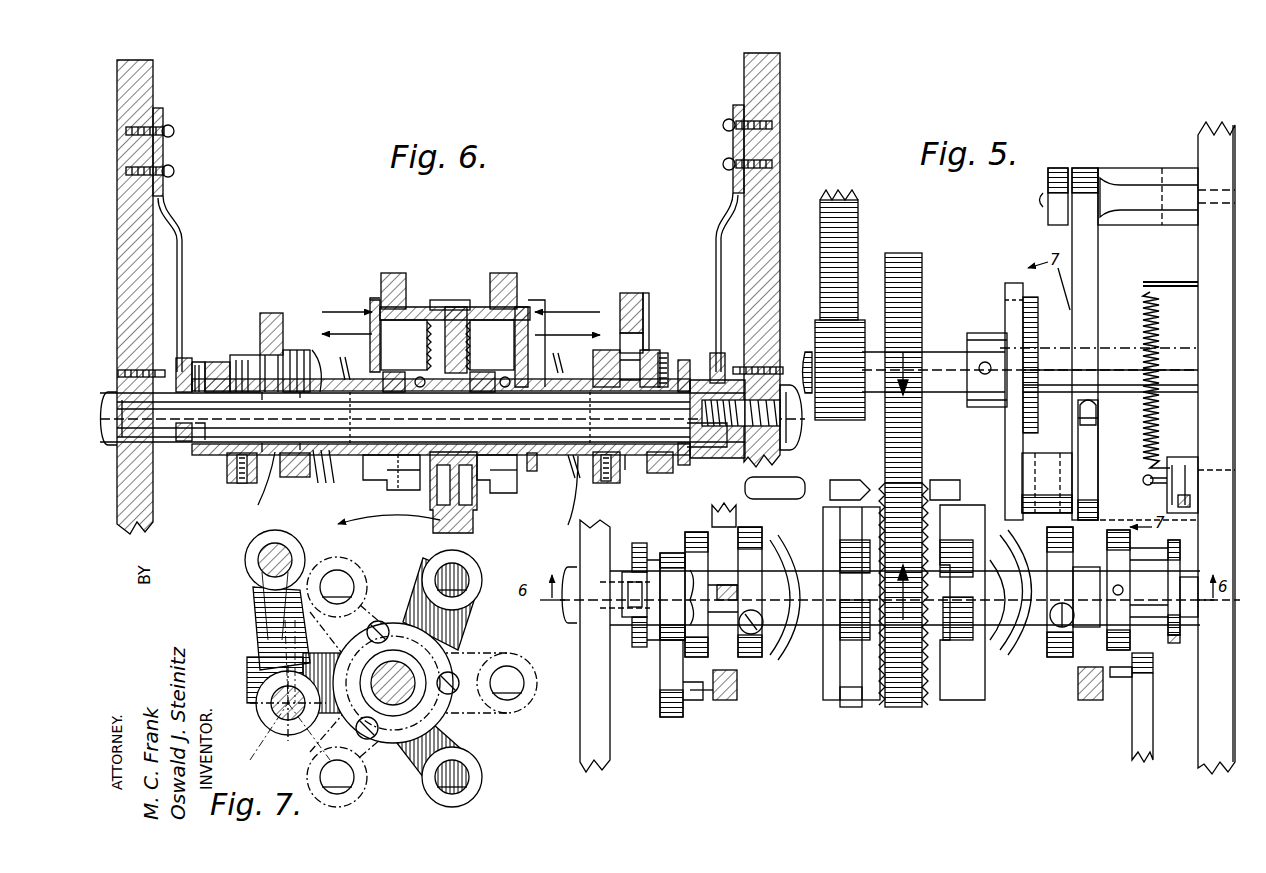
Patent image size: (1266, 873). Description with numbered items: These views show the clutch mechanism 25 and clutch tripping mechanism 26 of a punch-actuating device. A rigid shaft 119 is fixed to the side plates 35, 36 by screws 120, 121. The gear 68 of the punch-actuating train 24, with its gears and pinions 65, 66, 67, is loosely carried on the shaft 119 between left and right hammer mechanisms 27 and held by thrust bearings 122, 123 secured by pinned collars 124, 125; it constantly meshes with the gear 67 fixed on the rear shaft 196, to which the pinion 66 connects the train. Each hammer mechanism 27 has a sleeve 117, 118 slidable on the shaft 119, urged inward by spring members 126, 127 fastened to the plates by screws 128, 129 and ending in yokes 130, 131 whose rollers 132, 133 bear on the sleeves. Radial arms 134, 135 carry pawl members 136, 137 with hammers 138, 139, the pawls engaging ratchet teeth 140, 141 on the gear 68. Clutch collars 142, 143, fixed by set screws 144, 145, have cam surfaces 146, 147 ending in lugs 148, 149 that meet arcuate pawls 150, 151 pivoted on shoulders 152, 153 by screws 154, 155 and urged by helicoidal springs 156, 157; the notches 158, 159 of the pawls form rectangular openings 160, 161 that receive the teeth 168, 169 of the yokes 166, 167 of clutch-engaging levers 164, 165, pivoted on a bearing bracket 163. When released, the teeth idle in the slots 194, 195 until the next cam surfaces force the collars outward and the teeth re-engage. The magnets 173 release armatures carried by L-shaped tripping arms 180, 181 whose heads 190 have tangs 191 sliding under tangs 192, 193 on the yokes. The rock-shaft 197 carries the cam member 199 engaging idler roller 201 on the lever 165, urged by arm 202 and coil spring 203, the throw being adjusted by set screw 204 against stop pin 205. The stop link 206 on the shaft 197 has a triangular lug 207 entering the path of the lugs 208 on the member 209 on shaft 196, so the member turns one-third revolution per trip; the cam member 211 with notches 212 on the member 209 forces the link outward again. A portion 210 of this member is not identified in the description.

In FIG. 6, the side plate 35 is at (128, 232).
In FIG. 5, the side plate 35 is at (580, 728).
In FIG. 6, the side plate 36 is at (785, 200).
In FIG. 5, the side plate 36 is at (1198, 131).
In FIG. 5, the punch-actuating gear train 24 is at (862, 232).
In FIG. 6, the clutch mechanism 25 is at (555, 292).
In FIG. 5, the clutch mechanism 25 is at (918, 725).
In FIG. 6, the clutch tripping mechanism 26 is at (502, 543).
In FIG. 5, the clutch tripping mechanism 26 is at (1010, 282).
In FIG. 7, the clutch tripping mechanism 26 is at (482, 567).
In FIG. 6, the gear housing 27 is at (372, 297).
In FIG. 5, the gear housing 27 is at (820, 690).
In FIG. 5, the gear 65 is at (855, 195).
In FIG. 5, the pinion 66 is at (808, 348).
In FIG. 5, the gear 67 is at (905, 255).
In FIG. 6, the gear 68 is at (448, 300).
In FIG. 5, the gear 68 is at (880, 735).
In FIG. 6, the sleeve 117 is at (288, 478).
In FIG. 5, the sleeve 117 is at (789, 585).
In FIG. 6, the sleeve 118 is at (535, 472).
In FIG. 5, the sleeve 118 is at (1024, 583).
In FIG. 6, the rigid shaft 119 is at (560, 416).
In FIG. 5, the rigid shaft 119 is at (628, 555).
In FIG. 6, the screw 120 is at (115, 448).
In FIG. 5, the screw 120 is at (566, 565).
In FIG. 6, the screw 121 is at (800, 425).
In FIG. 6, the thrust bearing 122 is at (395, 455).
In FIG. 5, the thrust bearing 122 is at (855, 690).
In FIG. 6, the thrust bearing 123 is at (498, 452).
In FIG. 6, the collar 124 is at (385, 398).
In FIG. 5, the collar 124 is at (858, 642).
In FIG. 6, the collar 125 is at (552, 368).
In FIG. 5, the collar 125 is at (950, 545).
In FIG. 6, the spring member 126 is at (190, 238).
In FIG. 5, the spring member 126 is at (624, 610).
In FIG. 6, the spring member 127 is at (718, 228).
In FIG. 5, the spring member 127 is at (1196, 618).
In FIG. 6, the screw 128 is at (174, 134).
In FIG. 6, the screw 129 is at (724, 128).
In FIG. 6, the yoke 130 is at (190, 360).
In FIG. 5, the yoke 130 is at (635, 645).
In FIG. 6, the yoke 131 is at (708, 353).
In FIG. 5, the yoke 131 is at (1182, 640).
In FIG. 6, the rollers 132 is at (262, 402).
In FIG. 5, the rollers 132 is at (598, 635).
In FIG. 6, the rollers 133 is at (735, 450).
In FIG. 5, the rollers 133 is at (1182, 552).
In FIG. 6, the arm 134 is at (345, 323).
In FIG. 5, the arm 134 is at (830, 490).
In FIG. 6, the arm 135 is at (567, 323).
In FIG. 5, the arm 135 is at (985, 670).
In FIG. 6, the pawl member 136 is at (430, 505).
In FIG. 5, the pawl member 136 is at (862, 705).
In FIG. 6, the pawl member 137 is at (495, 493).
In FIG. 5, the pawl member 137 is at (945, 710).
In FIG. 6, the hammer 138 is at (392, 278).
In FIG. 5, the hammer 138 is at (866, 478).
In FIG. 6, the hammer 139 is at (500, 275).
In FIG. 5, the hammer 139 is at (948, 480).
In FIG. 6, the ratchet teeth 140 is at (425, 338).
In FIG. 5, the ratchet teeth 140 is at (875, 650).
In FIG. 6, the ratchet teeth 141 is at (460, 338).
In FIG. 5, the ratchet teeth 141 is at (953, 495).
In FIG. 6, the clutch collar 142 is at (224, 355).
In FIG. 5, the clutch collar 142 is at (668, 565).
In FIG. 6, the clutch collar 143 is at (665, 350).
In FIG. 5, the clutch collar 143 is at (1160, 650).
In FIG. 6, the set screw 144 is at (240, 483).
In FIG. 5, the set screw 144 is at (695, 545).
In FIG. 6, the set screw 145 is at (640, 477).
In FIG. 5, the set screw 145 is at (1149, 582).
In FIG. 6, the cam surface 146 is at (269, 428).
In FIG. 5, the cam surface 146 is at (760, 560).
In FIG. 6, the cam surface 147 is at (628, 440).
In FIG. 5, the cam surface 147 is at (1068, 655).
In FIG. 5, the lug 148 is at (724, 602).
In FIG. 5, the lug 149 is at (1048, 655).
In FIG. 6, the arcuate pawl 150 is at (290, 348).
In FIG. 5, the arcuate pawl 150 is at (759, 567).
In FIG. 6, the arcuate pawl 151 is at (598, 350).
In FIG. 5, the arcuate pawl 151 is at (1068, 592).
In FIG. 6, the shoulder 152 is at (311, 428).
In FIG. 5, the shoulder 152 is at (762, 635).
In FIG. 6, the shoulder 153 is at (589, 417).
In FIG. 5, the shoulder 153 is at (1028, 545).
In FIG. 6, the screw 154 is at (314, 397).
In FIG. 5, the screw 154 is at (778, 655).
In FIG. 6, the screw 155 is at (592, 482).
In FIG. 5, the screw 155 is at (1034, 598).
In FIG. 6, the flat helicoidal spring 156 is at (340, 362).
In FIG. 5, the flat helicoidal spring 156 is at (789, 597).
In FIG. 6, the flat helicoidal spring 157 is at (561, 495).
In FIG. 5, the notch 158 is at (855, 540).
In FIG. 5, the notch 159 is at (1012, 612).
In FIG. 6, the rectangular opening 160 is at (262, 358).
In FIG. 5, the rectangular opening 160 is at (662, 625).
In FIG. 6, the rectangular opening 161 is at (650, 353).
In FIG. 5, the rectangular opening 161 is at (1085, 575).
In FIG. 5, the bearing bracket 163 is at (1062, 170).
In FIG. 6, the clutch-engaging lever 164 is at (266, 310).
In FIG. 5, the clutch-engaging lever 164 is at (720, 504).
In FIG. 6, the clutch-engaging lever 165 is at (630, 292).
In FIG. 5, the clutch-engaging lever 165 is at (1088, 280).
In FIG. 6, the arcuate yoke 166 is at (282, 300).
In FIG. 5, the arcuate yoke 166 is at (727, 702).
In FIG. 6, the arcuate yoke 167 is at (647, 300).
In FIG. 5, the arcuate yoke 167 is at (1090, 700).
In FIG. 6, the clutch-engaging tooth 168 is at (269, 395).
In FIG. 6, the clutch-engaging tooth 169 is at (638, 340).
In FIG. 5, the magnet 173 is at (945, 700).
In FIG. 5, the L-shaped tripping arm 180 is at (668, 680).
In FIG. 5, the L-shaped tripping arm 181 is at (1135, 728).
In FIG. 5, the triangularly-shaped head 190 is at (672, 722).
In FIG. 5, the tang 191 is at (692, 702).
In FIG. 5, the tang 192 is at (703, 700).
In FIG. 5, the tang 193 is at (1085, 715).
In FIG. 6, the slot 194 is at (253, 483).
In FIG. 5, the slot 194 is at (724, 547).
In FIG. 6, the slot 195 is at (639, 490).
In FIG. 5, the slot 195 is at (1187, 535).
In FIG. 5, the shaft 196 is at (955, 335).
In FIG. 7, the shaft 196 is at (432, 665).
In FIG. 5, the rock-shaft 197 is at (990, 478).
In FIG. 7, the rock-shaft 197 is at (272, 567).
In FIG. 5, the cam member 199 is at (1092, 455).
In FIG. 5, the idler roller 201 is at (1096, 412).
In FIG. 5, the arm 202 is at (1208, 478).
In FIG. 5, the coil spring 203 is at (1160, 343).
In FIG. 5, the set screw 204 is at (1195, 500).
In FIG. 5, the stop pin 205 is at (1180, 455).
In FIG. 5, the stop link 206 is at (1045, 455).
In FIG. 7, the stop link 206 is at (262, 628).
In FIG. 7, the triangular lug 207 is at (280, 735).
In FIG. 5, the lug 208 is at (1034, 313).
In FIG. 7, the lug 208 is at (325, 740).
In FIG. 5, the member 209 is at (1008, 295).
In FIG. 7, the member 209 is at (410, 585).
In FIG. 5, the arm 210 is at (1010, 437).
In FIG. 7, the arm 210 is at (441, 604).
In FIG. 7, the cam member 211 is at (407, 680).
In FIG. 7, the notch 212 is at (435, 725).